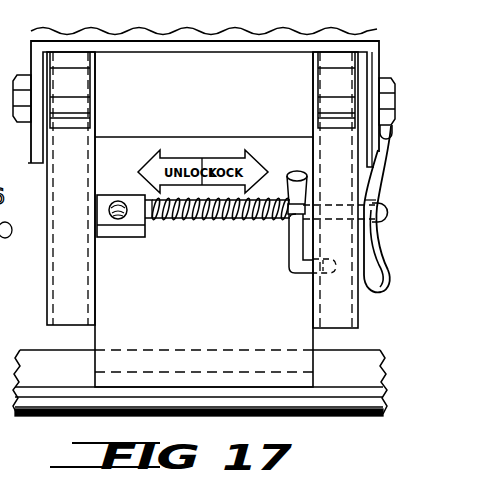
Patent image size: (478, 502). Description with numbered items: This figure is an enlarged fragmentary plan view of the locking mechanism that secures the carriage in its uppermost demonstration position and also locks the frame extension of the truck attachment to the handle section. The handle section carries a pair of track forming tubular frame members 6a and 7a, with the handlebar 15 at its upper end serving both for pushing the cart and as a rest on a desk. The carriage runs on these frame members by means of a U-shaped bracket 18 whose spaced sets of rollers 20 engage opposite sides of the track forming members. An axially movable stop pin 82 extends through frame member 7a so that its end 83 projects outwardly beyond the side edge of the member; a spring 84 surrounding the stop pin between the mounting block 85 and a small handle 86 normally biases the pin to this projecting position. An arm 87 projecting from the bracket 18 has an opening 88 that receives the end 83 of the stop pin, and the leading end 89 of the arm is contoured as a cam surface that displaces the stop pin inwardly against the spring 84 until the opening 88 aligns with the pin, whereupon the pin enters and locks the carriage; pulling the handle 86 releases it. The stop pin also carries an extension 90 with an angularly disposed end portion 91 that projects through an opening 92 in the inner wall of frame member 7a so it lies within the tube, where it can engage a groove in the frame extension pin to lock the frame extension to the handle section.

The U-shaped bracket 18 is at (373, 65).
The rollers 20 is at (85, 92).
The track forming tubular frame member 6a is at (83, 302).
The track forming tubular frame member 7a is at (347, 322).
The handlebar 15 is at (0, 333).
The stop pin 82 is at (252, 203).
The projecting end of stop pin 83 is at (388, 217).
The spring 84 is at (202, 220).
The mounting block 85 is at (115, 237).
The handle 86 is at (308, 172).
The arm 87 is at (380, 163).
The opening 88 is at (372, 203).
The leading end of arm 89 is at (387, 285).
The stop pin extension 90 is at (288, 243).
The angularly disposed end portion 91 is at (314, 283).
The opening in frame member 92 is at (318, 268).